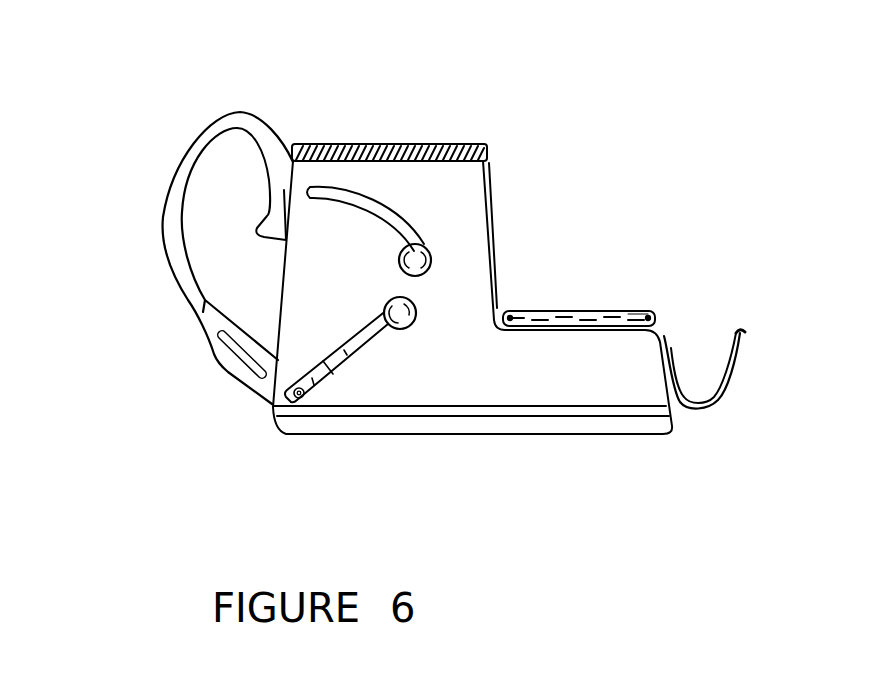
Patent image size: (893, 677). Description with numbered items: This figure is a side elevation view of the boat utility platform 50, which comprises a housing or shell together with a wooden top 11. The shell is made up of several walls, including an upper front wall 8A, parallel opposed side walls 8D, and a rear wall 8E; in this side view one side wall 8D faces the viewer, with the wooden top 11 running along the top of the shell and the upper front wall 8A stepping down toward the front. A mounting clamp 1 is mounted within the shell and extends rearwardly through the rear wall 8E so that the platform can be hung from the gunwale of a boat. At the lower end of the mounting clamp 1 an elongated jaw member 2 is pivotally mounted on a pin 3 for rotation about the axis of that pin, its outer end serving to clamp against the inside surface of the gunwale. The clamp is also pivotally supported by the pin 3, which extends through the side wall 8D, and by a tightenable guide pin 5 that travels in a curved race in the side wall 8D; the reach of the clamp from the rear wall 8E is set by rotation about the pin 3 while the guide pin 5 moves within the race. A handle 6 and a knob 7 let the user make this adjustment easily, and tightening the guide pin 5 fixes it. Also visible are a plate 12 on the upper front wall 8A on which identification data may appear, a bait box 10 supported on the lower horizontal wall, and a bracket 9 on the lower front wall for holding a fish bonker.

The mounting clamp 1 is at (197, 137).
The jaw member 2 is at (230, 358).
The pin 3 is at (300, 398).
The guide pin 5 is at (430, 248).
The handle 6 is at (325, 375).
The knob 7 is at (414, 300).
The upper front wall 8A is at (494, 298).
The side wall 8D is at (556, 366).
The rear wall 8E is at (276, 292).
The bracket 9 is at (695, 400).
The bait box 10 is at (633, 312).
The wooden top 11 is at (457, 147).
The plate 12 is at (487, 190).
The boat utility platform 50 is at (380, 97).